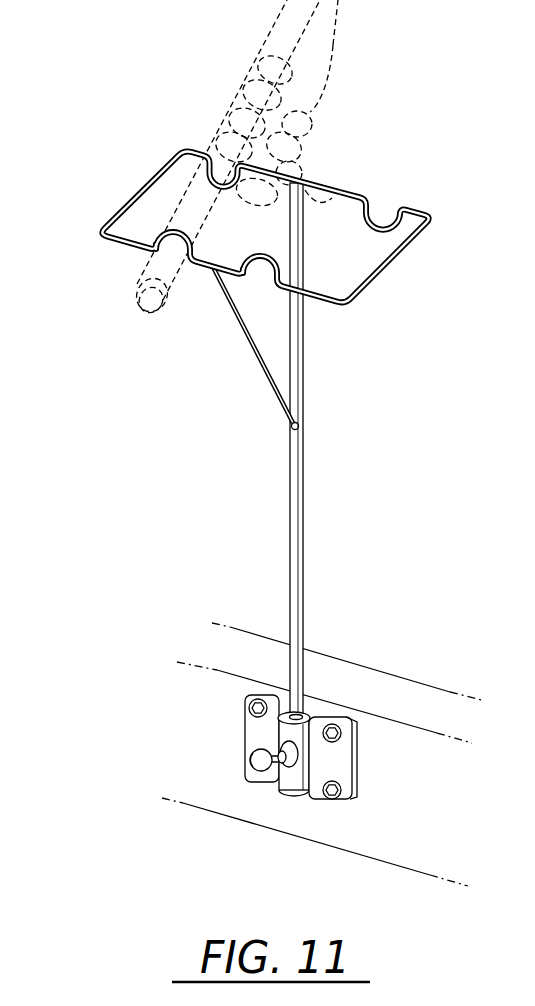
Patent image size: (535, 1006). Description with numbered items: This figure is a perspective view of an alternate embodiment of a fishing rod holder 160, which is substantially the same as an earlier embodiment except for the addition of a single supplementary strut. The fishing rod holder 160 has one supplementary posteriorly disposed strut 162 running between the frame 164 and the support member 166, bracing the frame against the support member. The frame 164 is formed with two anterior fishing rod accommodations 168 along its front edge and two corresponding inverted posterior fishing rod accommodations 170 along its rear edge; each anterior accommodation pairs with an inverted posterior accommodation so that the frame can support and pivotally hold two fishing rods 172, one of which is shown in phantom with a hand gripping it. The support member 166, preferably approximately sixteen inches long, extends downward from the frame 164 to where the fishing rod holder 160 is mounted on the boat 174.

The fishing rod holder 160 is at (291, 251).
The supplementary posteriorly disposed strut 162 is at (250, 338).
The frame 164 is at (116, 247).
The support member 166 is at (303, 517).
The anterior fishing rod accommodations 168 is at (385, 212).
The inverted posterior fishing rod accommodations 170 is at (267, 278).
The fishing rods 172 is at (228, 133).
The boat 174 is at (387, 737).